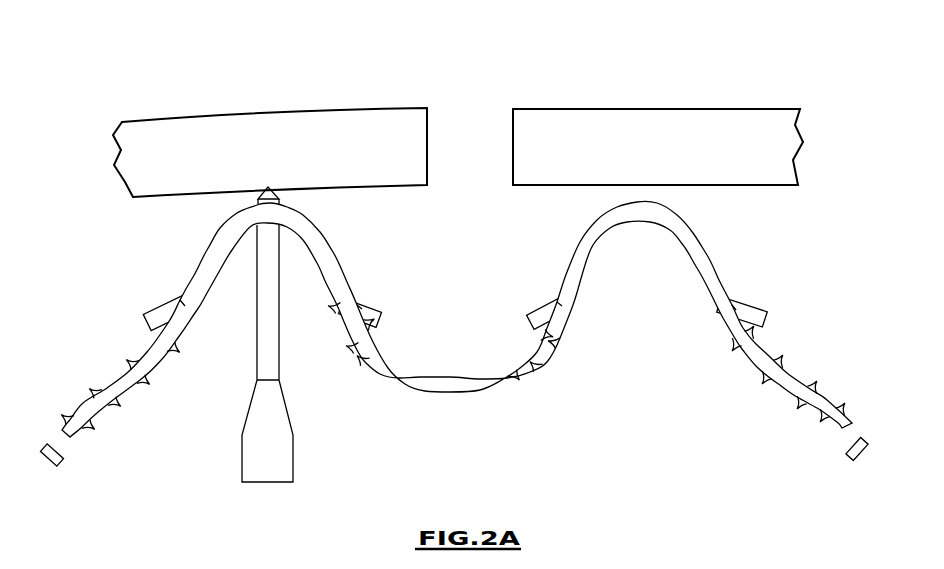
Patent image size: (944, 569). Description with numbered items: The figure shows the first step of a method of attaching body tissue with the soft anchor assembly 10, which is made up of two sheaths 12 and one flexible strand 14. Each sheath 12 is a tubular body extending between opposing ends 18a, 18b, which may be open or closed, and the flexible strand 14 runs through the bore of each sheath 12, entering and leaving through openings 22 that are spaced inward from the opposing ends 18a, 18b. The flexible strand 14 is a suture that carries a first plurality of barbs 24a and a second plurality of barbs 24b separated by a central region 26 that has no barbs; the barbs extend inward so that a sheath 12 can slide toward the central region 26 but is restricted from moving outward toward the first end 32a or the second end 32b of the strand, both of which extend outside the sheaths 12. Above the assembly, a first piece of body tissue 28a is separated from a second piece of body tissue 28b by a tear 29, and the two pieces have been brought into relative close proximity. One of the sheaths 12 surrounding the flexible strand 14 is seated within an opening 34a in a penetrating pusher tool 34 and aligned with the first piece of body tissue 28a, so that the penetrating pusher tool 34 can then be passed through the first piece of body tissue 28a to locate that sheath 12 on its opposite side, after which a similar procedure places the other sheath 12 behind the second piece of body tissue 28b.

The soft anchor assembly 10 is at (800, 232).
The sheath 12 is at (335, 244).
The flexible strand 14 is at (110, 355).
The opposing end 18a is at (143, 313).
The opposing end 18b is at (378, 314).
The openings 22 is at (196, 303).
The first plurality of barbs 24a is at (116, 405).
The second plurality of barbs 24b is at (528, 378).
The central region 26 is at (438, 402).
The first piece of body tissue 28a is at (286, 135).
The second piece of body tissue 28b is at (621, 123).
The tear 29 is at (498, 84).
The first end 32a is at (60, 462).
The second end 32b is at (845, 453).
The penetrating pusher tool 34 is at (263, 440).
The opening 34a is at (290, 197).